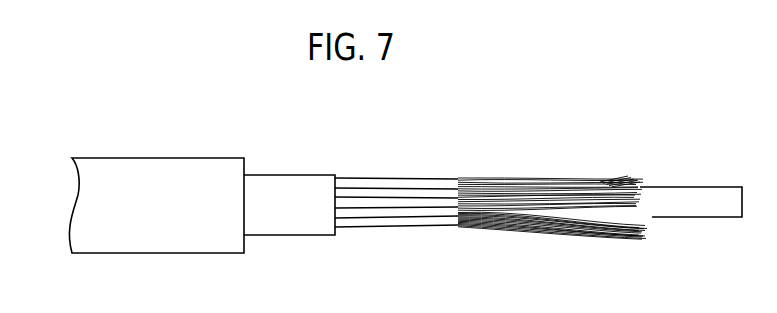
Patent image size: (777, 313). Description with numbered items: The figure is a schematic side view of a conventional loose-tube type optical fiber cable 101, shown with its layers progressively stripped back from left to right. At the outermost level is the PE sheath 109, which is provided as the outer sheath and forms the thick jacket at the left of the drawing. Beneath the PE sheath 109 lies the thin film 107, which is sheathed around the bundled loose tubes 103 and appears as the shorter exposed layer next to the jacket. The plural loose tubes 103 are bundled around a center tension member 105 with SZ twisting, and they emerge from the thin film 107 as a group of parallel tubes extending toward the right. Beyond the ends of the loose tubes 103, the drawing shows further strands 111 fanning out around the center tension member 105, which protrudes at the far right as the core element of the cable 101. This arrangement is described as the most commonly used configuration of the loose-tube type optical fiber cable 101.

The loose-tube type optical fiber cable 101 is at (103, 141).
The loose tubes 103 is at (393, 207).
The center tension member 105 is at (697, 187).
The thin film 107 is at (292, 175).
The PE sheath 109 is at (178, 158).
The braided shield strands 111 is at (570, 207).